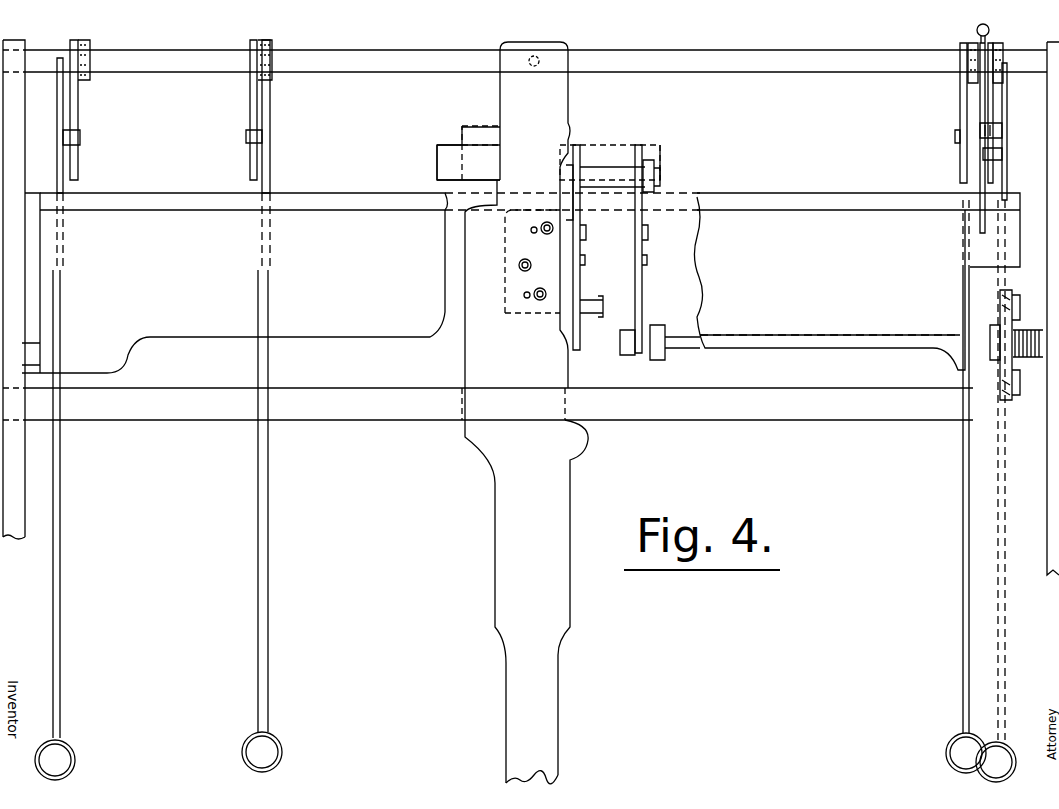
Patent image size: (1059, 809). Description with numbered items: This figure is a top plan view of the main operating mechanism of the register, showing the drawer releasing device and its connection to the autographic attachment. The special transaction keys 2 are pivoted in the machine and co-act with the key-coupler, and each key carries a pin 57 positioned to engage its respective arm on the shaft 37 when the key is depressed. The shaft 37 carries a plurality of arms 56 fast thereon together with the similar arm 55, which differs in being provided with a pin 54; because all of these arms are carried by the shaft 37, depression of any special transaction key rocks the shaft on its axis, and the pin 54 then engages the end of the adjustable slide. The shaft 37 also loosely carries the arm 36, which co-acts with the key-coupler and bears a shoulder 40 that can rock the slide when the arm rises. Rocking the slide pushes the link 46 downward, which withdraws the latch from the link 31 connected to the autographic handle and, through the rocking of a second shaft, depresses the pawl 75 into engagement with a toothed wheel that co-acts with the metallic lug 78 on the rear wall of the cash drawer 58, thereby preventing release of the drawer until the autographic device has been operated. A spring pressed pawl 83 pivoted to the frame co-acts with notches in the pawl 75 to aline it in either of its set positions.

The special transaction key 2 is at (963, 600).
The link 31 is at (1003, 318).
The arm 36 is at (982, 222).
The shaft 37 is at (752, 72).
The shoulder 40 is at (1000, 126).
The link 46 is at (1000, 400).
The pin 54 is at (1000, 157).
The arm 55 is at (980, 108).
The arm 56 is at (250, 108).
The pin 57 is at (248, 135).
The cash drawer 58 is at (445, 163).
The pawl 75 is at (652, 165).
The lug 78 is at (612, 176).
The spring pressed pawl 83 is at (633, 318).